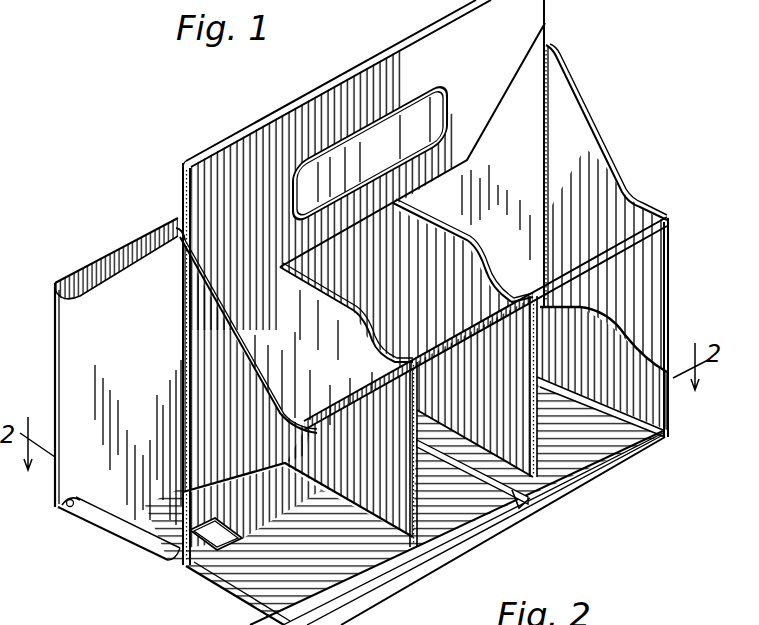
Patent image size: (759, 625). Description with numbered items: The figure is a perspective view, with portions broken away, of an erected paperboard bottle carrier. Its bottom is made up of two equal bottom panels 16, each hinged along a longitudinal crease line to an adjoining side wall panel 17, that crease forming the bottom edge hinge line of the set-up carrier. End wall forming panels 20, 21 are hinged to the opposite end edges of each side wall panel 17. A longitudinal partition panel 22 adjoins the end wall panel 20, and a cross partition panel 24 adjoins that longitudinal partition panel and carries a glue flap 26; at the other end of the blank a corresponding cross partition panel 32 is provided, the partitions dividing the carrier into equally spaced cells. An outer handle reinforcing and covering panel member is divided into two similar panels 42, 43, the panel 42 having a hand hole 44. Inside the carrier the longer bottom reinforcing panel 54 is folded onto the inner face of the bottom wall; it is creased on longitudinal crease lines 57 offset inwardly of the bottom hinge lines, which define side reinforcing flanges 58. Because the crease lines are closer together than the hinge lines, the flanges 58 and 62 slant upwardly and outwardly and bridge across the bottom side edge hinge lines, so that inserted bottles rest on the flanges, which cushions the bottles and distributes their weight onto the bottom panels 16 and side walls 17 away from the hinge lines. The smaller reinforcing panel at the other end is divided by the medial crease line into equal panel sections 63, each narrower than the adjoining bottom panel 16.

The bottom panel 16 is at (515, 510).
The side wall panel 17 is at (128, 248).
The end wall forming panel 20 is at (67, 323).
The end wall forming panel 21 is at (587, 153).
The longitudinal partition panel 22 is at (163, 537).
The cross partition panel 24 is at (334, 345).
The glue flap 26 is at (180, 233).
The cross partition panel 32 is at (450, 300).
The handle reinforcing panel 42 is at (356, 92).
The handle reinforcing panel 43 is at (185, 183).
The hand hole 44 is at (405, 98).
The bottom reinforcing panel 54 is at (267, 577).
The crease line 57 is at (78, 503).
The side reinforcing flange 58 is at (74, 519).
The side reinforcing flange 62 is at (577, 477).
The panel section 63 is at (613, 443).